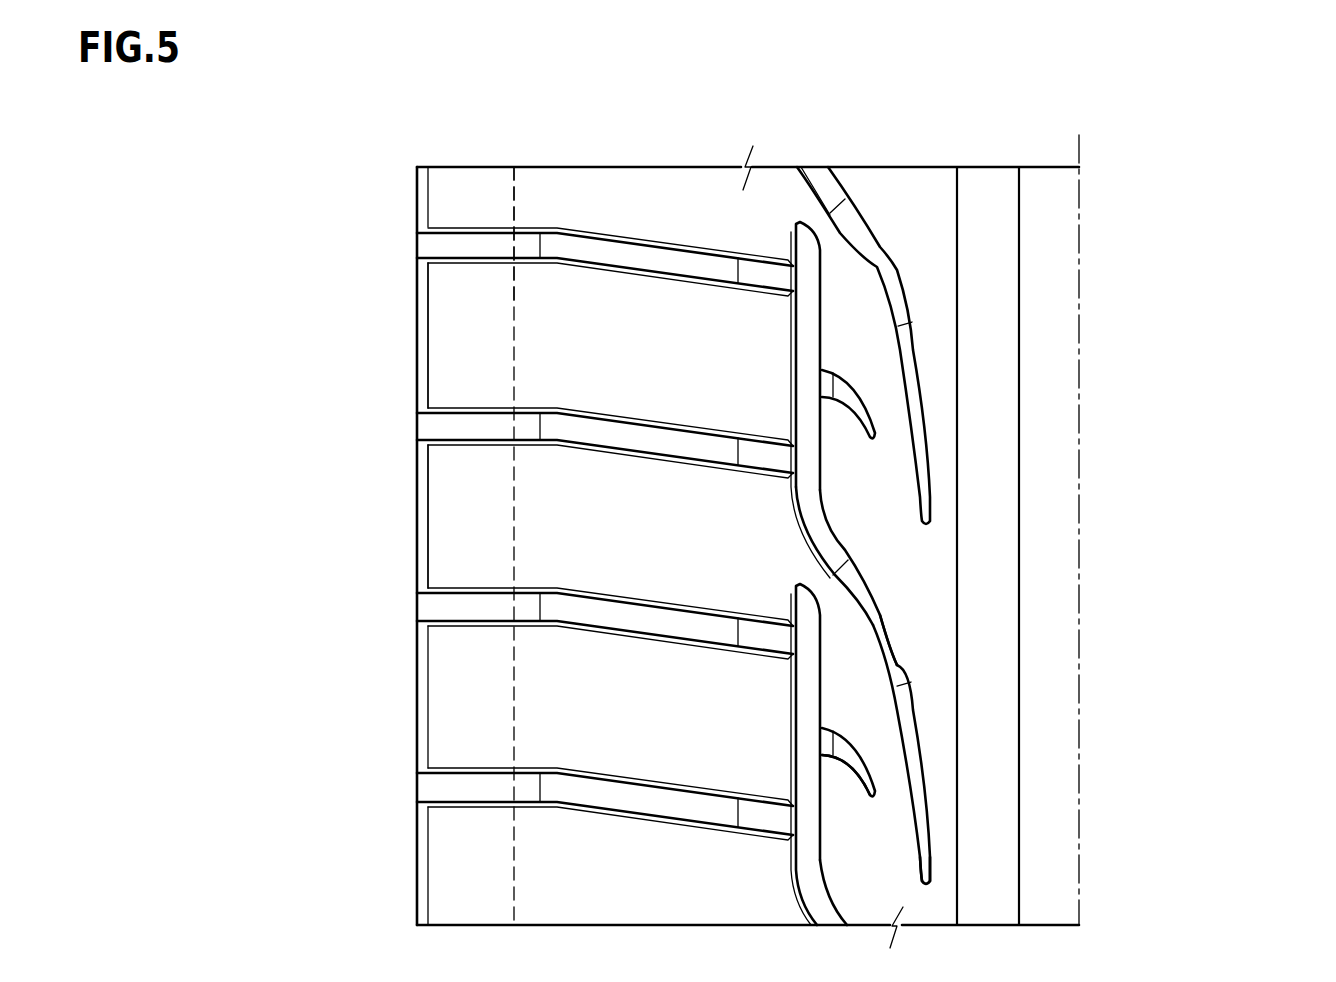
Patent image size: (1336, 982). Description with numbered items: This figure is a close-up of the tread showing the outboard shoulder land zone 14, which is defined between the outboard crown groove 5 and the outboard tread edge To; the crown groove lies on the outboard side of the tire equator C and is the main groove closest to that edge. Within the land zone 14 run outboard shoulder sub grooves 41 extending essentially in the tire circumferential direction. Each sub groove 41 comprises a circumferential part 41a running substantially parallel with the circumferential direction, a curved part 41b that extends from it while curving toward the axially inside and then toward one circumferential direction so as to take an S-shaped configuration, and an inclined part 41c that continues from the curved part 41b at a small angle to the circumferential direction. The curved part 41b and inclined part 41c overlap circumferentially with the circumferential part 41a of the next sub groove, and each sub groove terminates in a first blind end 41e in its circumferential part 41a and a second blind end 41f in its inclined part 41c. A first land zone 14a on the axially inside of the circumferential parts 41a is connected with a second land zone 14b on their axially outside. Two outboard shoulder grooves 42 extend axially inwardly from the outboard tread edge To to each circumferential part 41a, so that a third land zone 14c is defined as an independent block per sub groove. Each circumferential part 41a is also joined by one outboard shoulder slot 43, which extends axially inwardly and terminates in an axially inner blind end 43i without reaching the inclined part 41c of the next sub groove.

The outboard crown groove 5 is at (989, 203).
The outboard shoulder land zone 14 is at (655, 208).
The first land zone 14a is at (1024, 567).
The second land zone 14b is at (595, 528).
The third land zone 14c is at (595, 345).
The outboard shoulder sub groove 41 is at (818, 546).
The circumferential part 41a is at (789, 372).
The curved part 41b is at (782, 706).
The inclined part 41c is at (923, 857).
The first blind end 41e is at (797, 221).
The second blind end 41f is at (927, 883).
The outboard shoulder groove 42 is at (595, 432).
The outboard shoulder slot 43 is at (592, 819).
The axially inner blind end 43i is at (873, 793).
The outboard tread edge To is at (513, 192).
The tire equator C is at (1077, 514).